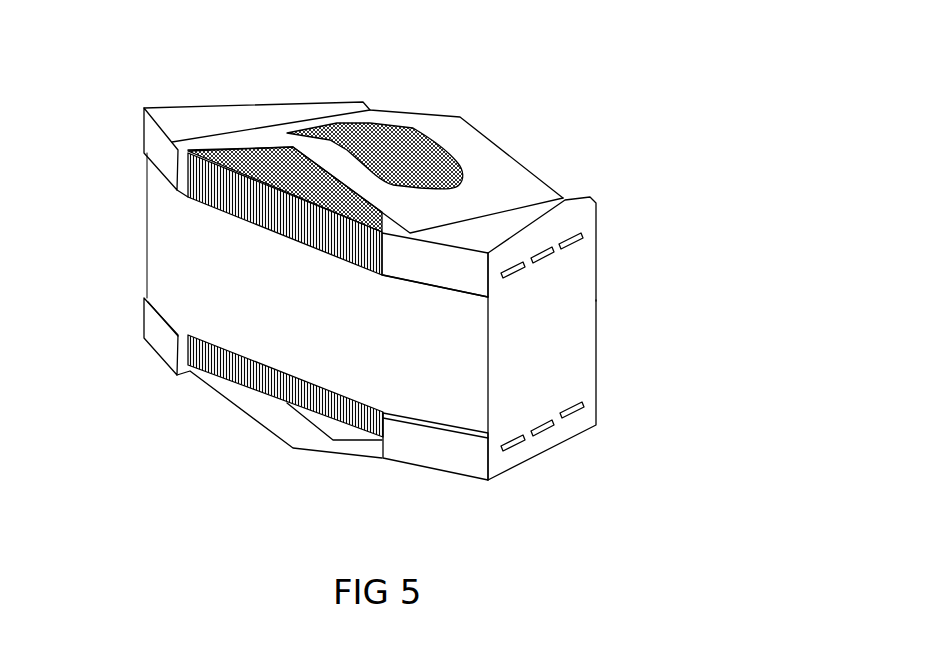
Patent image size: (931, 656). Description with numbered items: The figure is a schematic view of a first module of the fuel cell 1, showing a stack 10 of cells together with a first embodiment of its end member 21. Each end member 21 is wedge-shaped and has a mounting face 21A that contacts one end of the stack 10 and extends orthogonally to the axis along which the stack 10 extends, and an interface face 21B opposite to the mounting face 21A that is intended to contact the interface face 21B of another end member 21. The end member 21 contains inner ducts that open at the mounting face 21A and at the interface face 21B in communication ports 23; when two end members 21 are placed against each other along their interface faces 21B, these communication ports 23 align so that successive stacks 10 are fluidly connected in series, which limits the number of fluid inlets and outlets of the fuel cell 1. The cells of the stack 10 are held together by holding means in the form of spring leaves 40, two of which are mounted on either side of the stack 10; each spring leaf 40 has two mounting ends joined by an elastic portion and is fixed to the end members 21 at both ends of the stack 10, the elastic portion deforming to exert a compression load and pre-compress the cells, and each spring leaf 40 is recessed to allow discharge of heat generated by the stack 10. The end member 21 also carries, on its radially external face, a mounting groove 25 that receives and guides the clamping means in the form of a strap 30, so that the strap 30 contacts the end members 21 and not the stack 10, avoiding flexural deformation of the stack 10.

The fuel cell 1 is at (183, 88).
The stack 10 is at (368, 133).
The end member 21 is at (567, 200).
The mounting face 21A is at (523, 360).
The interface face 21B is at (582, 302).
The communication ports 23 is at (584, 241).
The mounting groove 25 is at (428, 418).
The strap 30 is at (150, 230).
The spring leaf 40 is at (460, 117).